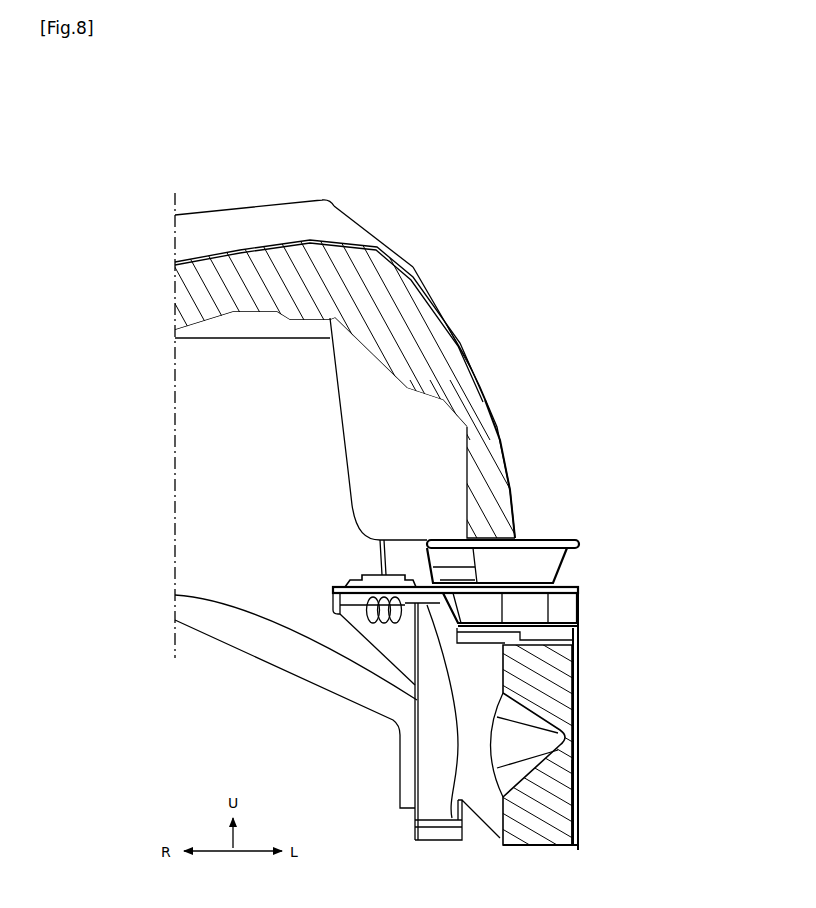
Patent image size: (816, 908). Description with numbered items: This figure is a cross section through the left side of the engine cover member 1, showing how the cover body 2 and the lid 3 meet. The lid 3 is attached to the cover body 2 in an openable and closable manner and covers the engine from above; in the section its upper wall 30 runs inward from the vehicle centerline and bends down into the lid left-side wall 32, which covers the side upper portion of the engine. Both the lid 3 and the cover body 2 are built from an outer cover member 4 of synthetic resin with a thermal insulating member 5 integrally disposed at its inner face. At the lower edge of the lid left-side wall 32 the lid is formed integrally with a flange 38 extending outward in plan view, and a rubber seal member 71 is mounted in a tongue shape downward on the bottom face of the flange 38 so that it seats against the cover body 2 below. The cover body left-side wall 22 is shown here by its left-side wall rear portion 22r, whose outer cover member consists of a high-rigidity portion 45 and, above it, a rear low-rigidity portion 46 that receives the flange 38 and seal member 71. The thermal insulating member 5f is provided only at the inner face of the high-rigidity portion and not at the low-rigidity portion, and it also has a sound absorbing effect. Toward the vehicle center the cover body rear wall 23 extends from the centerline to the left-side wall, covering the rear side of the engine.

The cover member 1 is at (436, 152).
The cover body 2 is at (680, 700).
The lid 3 is at (418, 229).
The outer cover member 4 is at (455, 338).
The thermal insulating member 5 is at (430, 393).
The thermal insulating member 5f is at (543, 851).
The cover body left-side wall 22 is at (634, 733).
The left-side wall rear portion 22r is at (594, 697).
The cover body rear wall 23 is at (228, 642).
The upper wall 30 is at (248, 207).
The lid left-side wall 32 is at (492, 420).
The flange 38 is at (547, 538).
The high-rigidity portion 45 is at (579, 793).
The rear low-rigidity portion 46 is at (578, 613).
The seal member 71 is at (560, 568).